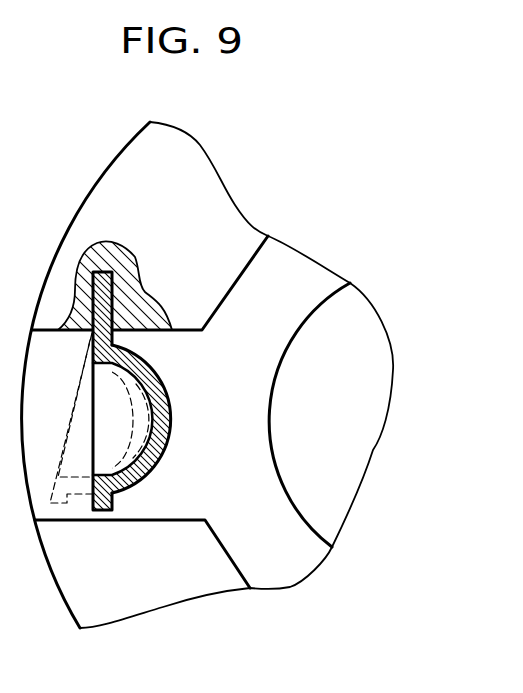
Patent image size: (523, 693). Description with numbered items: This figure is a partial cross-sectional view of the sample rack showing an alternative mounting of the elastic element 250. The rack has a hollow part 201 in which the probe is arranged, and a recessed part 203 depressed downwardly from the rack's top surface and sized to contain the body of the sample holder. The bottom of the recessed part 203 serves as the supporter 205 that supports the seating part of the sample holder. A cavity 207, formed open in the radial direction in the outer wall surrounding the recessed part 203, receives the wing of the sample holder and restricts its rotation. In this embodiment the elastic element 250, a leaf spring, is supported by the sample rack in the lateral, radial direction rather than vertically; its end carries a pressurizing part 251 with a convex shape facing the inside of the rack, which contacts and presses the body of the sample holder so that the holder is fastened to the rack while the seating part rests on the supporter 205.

The hollow part 201 is at (342, 456).
The recessed part 203 is at (282, 322).
The supporter 205 is at (318, 291).
The cavity 207 is at (198, 507).
The elastic element 250 is at (163, 375).
The pressurizing part 251 is at (181, 395).